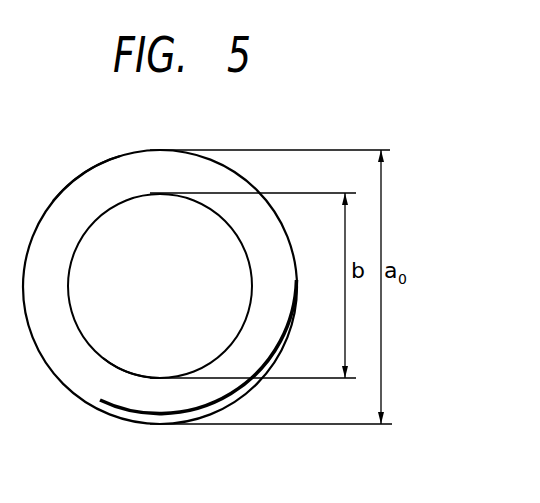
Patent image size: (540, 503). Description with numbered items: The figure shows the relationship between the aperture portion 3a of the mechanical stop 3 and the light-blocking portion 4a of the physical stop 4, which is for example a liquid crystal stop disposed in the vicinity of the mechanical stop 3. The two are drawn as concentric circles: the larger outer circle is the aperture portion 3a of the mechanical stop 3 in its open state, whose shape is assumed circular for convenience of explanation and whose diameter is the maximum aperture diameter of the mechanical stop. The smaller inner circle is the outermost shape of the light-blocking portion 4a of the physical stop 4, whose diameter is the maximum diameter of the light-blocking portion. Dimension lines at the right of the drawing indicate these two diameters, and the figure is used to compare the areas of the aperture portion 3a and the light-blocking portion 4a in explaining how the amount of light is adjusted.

The mechanical stop 3 is at (68, 182).
The aperture portion 3a is at (53, 200).
The physical stop 4 is at (126, 372).
The light-blocking portion 4a is at (103, 358).